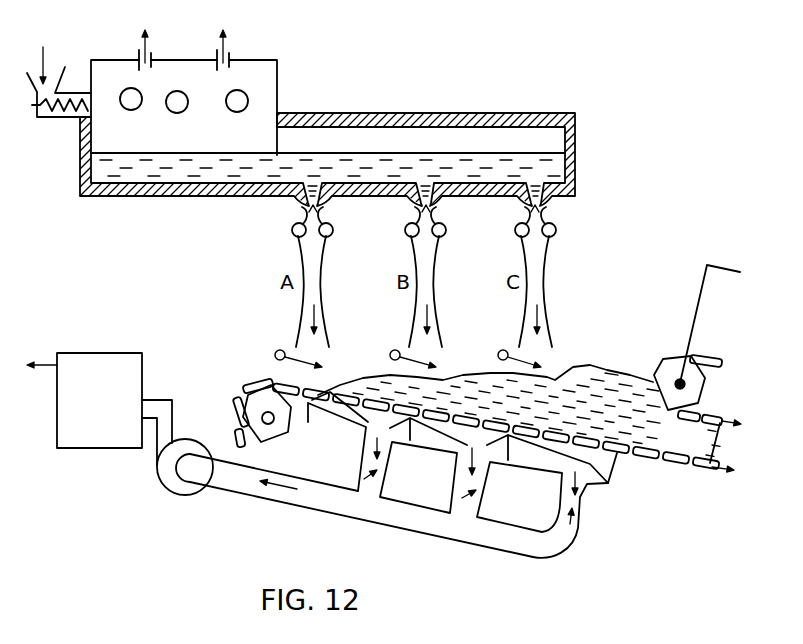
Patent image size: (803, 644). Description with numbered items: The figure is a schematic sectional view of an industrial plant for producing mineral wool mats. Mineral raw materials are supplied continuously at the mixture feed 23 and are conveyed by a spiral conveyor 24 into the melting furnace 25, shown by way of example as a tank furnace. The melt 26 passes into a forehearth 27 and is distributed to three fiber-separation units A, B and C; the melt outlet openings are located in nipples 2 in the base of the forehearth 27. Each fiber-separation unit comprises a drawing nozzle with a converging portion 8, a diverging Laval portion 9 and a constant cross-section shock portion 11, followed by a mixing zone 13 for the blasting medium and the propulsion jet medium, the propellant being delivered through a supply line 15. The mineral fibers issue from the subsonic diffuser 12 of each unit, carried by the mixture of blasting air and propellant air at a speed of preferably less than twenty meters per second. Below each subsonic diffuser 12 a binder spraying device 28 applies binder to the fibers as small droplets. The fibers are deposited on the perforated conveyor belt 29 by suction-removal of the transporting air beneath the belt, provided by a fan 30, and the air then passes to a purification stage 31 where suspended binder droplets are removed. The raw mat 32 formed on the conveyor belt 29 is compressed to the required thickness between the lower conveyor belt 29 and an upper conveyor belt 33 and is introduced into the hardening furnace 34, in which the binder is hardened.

The nipple 2 is at (555, 197).
The converging portion of the drawing nozzle 8 is at (556, 205).
The diverging portion of the drawing nozzle 9 is at (525, 219).
The portion of the drawing nozzle with a constant cross-section 11 is at (541, 282).
The subsonic diffuser 12 is at (546, 326).
The mixing zone 13 is at (540, 250).
The supply line for the propellant 15 is at (515, 231).
The mixture feed 23 is at (46, 56).
The spiral conveyor 24 is at (72, 113).
The melting furnace 25 is at (237, 76).
The melt 26 is at (268, 170).
The forehearth 27 is at (410, 133).
The addition of binder 28 is at (278, 351).
The conveyor belt 29 is at (636, 455).
The fan 30 is at (181, 493).
The purification of outgoing air 31 is at (87, 368).
The raw mat 32 is at (615, 377).
The mat compression 33 is at (670, 359).
The hardening furnace 34 is at (709, 290).